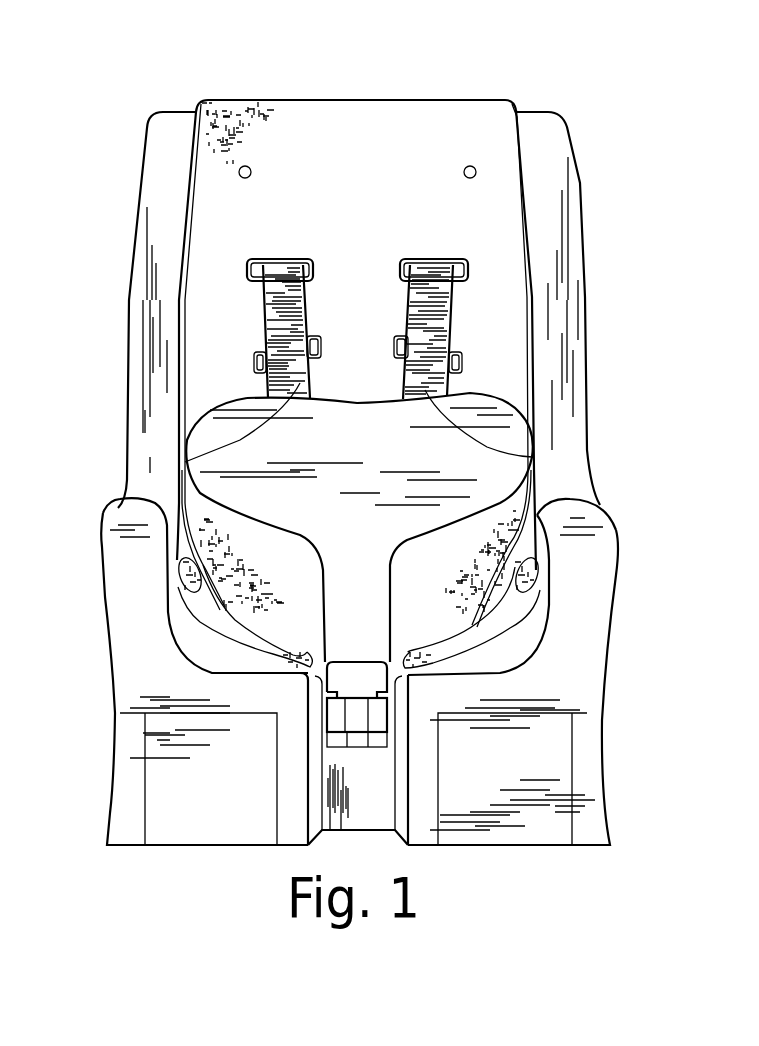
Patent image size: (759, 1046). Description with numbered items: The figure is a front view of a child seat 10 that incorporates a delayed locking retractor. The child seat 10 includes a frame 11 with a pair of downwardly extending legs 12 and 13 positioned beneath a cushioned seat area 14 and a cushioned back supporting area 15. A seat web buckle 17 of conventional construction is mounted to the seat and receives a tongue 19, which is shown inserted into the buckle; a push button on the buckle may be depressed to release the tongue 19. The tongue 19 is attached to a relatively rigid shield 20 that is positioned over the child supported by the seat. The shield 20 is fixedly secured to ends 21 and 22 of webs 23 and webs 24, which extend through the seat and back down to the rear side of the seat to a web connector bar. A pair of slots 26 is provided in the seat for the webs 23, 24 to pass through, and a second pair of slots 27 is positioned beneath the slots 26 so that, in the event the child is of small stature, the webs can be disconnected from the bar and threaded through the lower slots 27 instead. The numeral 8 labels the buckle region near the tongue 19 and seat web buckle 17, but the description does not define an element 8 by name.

The child seat 10 is at (600, 148).
The frame 11 is at (567, 200).
The cushioned back supporting area 15 is at (352, 133).
The webs 23 is at (263, 268).
The webs 24 is at (453, 267).
The slots 26 is at (313, 263).
The second pair of slots 27 is at (255, 360).
The shield 20 is at (513, 437).
The end of web 21 is at (185, 457).
The end of web 22 is at (532, 455).
The cushioned seat area 14 is at (473, 623).
The tongue 19 is at (352, 683).
The buckle 8 is at (352, 717).
The seat web buckle 17 is at (380, 723).
The leg 12 is at (228, 823).
The leg 13 is at (543, 830).